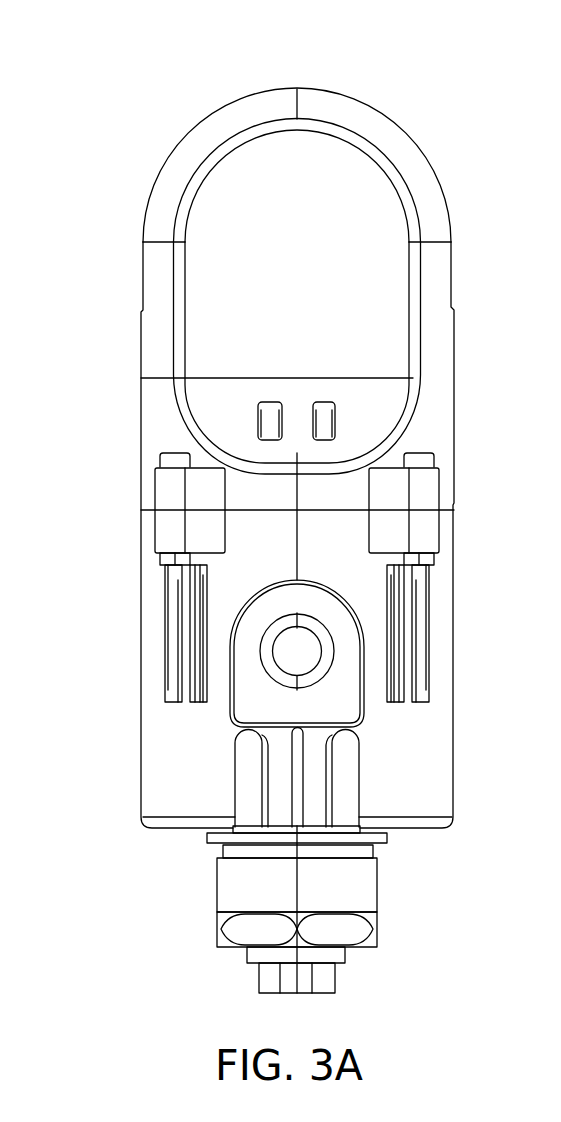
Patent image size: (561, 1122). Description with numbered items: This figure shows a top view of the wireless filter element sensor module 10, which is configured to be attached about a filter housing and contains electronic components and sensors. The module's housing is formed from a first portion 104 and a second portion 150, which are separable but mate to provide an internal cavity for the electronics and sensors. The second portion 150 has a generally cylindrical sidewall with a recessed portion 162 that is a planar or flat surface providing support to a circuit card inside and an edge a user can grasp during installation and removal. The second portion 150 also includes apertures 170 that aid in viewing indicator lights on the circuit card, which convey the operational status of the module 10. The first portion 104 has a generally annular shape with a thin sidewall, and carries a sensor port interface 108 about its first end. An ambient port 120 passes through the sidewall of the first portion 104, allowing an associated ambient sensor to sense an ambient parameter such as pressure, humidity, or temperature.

The wireless filter element sensor module 10 is at (391, 74).
The second portion 150 is at (165, 215).
The recessed portion 162 is at (277, 188).
The apertures 170 is at (325, 427).
The first portion 104 is at (188, 797).
The ambient port 120 is at (285, 663).
The sensor port interface 108 is at (350, 943).